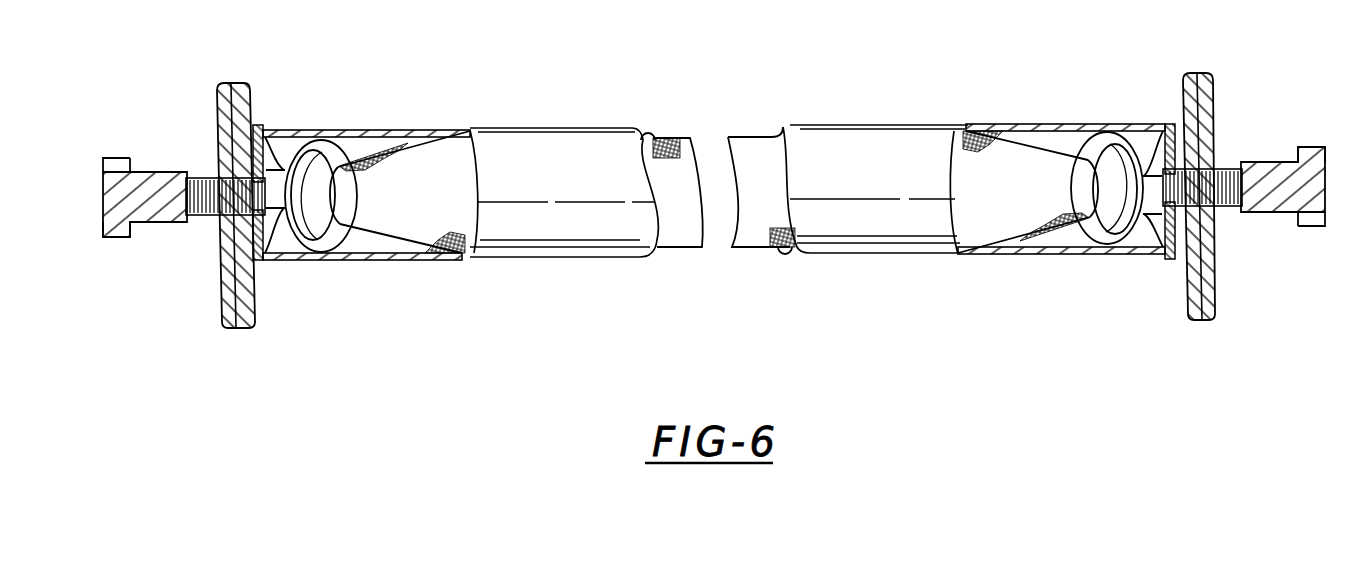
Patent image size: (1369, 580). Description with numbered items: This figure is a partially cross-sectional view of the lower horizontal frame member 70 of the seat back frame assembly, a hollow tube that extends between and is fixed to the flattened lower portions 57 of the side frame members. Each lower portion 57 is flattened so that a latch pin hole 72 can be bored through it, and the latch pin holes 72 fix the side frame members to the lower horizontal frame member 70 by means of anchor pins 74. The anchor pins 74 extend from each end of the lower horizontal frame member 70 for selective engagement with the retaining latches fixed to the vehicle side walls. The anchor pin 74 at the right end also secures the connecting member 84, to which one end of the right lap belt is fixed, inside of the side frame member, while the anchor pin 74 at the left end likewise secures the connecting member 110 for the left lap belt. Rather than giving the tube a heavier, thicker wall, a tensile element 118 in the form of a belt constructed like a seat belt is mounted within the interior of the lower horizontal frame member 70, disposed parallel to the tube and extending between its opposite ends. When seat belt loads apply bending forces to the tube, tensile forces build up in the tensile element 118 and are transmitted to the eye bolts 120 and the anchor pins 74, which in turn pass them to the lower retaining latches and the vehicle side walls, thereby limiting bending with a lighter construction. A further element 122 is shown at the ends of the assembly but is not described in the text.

The lower portion 57 is at (217, 103).
The lower horizontal frame member 70 is at (852, 242).
The latch pin hole 72 is at (238, 217).
The anchor pin 74 is at (103, 160).
The connecting member 84 is at (245, 85).
The connecting member 110 is at (1190, 313).
The tensile element 118 is at (750, 243).
The eye bolt 120 is at (335, 140).
The flanged bushing 122 is at (290, 134).